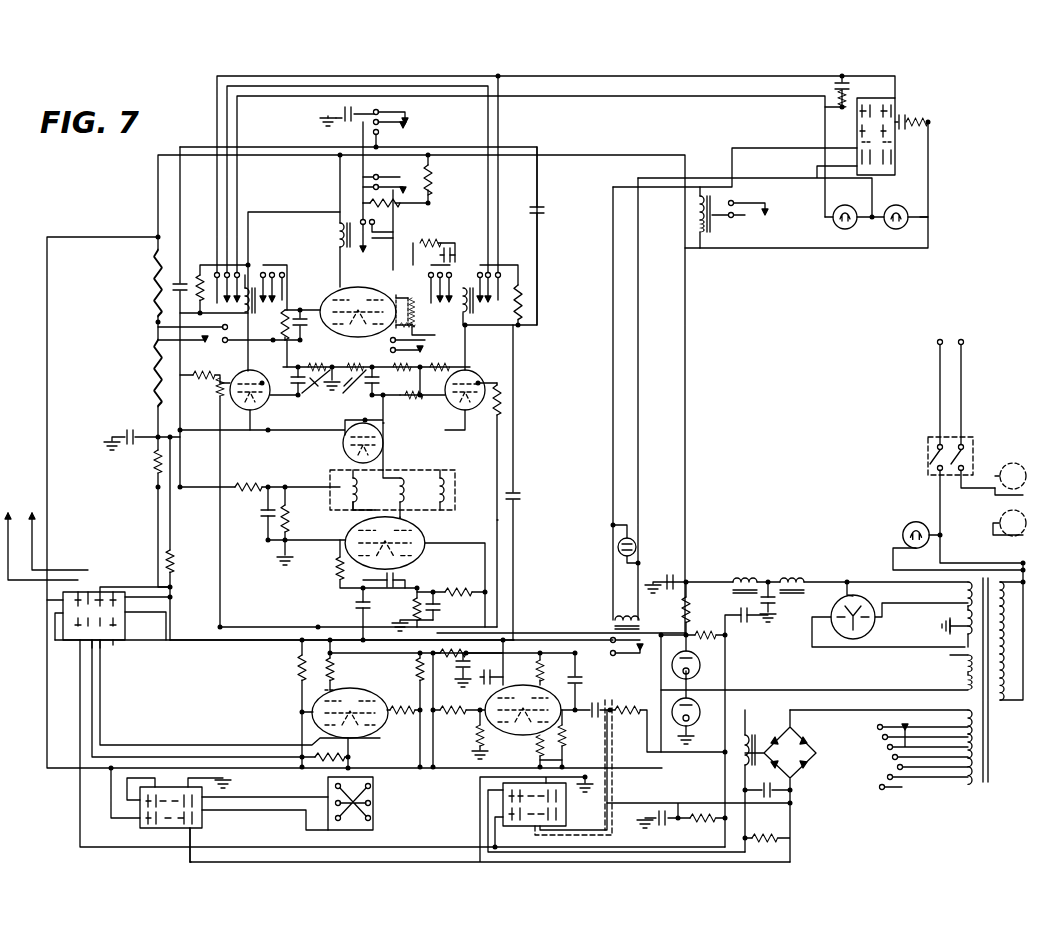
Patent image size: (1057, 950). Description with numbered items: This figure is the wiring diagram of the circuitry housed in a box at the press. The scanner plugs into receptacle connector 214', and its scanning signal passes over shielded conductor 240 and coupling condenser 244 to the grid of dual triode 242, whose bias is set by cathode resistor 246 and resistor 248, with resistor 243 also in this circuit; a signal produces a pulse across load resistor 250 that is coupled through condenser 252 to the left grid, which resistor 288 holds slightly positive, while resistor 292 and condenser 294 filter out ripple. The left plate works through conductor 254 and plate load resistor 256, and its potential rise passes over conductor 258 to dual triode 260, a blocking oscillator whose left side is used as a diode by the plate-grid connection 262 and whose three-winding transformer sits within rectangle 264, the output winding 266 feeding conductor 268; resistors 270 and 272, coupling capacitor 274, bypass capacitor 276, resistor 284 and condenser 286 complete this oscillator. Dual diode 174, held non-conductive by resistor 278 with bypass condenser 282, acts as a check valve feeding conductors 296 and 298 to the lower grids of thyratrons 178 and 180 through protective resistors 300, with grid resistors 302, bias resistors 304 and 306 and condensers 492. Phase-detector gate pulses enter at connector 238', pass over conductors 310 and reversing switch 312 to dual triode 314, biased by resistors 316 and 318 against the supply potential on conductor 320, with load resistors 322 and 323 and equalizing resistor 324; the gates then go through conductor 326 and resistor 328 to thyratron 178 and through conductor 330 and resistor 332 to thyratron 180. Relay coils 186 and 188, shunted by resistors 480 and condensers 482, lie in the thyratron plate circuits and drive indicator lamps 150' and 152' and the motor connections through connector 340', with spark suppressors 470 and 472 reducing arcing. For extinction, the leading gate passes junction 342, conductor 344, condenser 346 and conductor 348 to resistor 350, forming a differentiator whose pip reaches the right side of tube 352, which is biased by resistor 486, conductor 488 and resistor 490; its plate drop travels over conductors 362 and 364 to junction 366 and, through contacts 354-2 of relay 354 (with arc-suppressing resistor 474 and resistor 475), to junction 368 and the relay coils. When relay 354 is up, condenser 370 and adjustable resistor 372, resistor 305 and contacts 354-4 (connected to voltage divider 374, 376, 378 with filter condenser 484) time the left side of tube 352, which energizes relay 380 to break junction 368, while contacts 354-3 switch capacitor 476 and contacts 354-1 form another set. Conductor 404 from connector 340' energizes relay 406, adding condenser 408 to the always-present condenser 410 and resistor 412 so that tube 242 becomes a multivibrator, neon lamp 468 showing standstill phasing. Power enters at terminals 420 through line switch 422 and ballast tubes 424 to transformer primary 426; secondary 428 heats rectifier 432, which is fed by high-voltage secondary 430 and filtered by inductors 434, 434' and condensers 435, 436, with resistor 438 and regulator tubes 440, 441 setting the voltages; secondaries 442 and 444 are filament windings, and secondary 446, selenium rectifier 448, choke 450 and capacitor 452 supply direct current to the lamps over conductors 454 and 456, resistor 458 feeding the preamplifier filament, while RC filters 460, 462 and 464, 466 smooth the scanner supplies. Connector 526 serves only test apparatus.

The capacitor 476 is at (343, 119).
The upper relay contacts 354-3 is at (406, 126).
The relay contacts 354-2 is at (390, 213).
The resistor 475 is at (436, 182).
The resistor 474 is at (368, 198).
The junction 368 is at (363, 203).
The junction 366 is at (430, 203).
The relay 380 is at (337, 236).
The conductor 364 is at (374, 228).
The conductor 362 is at (392, 242).
The resistor 490 is at (440, 245).
The conductor 488 is at (435, 256).
The relay coil 188 is at (464, 280).
The condensers 482 is at (542, 213).
The spark suppressor 470 is at (837, 87).
The spark suppressor 472 is at (850, 95).
The connector 340' is at (767, 157).
The relay 354 is at (695, 216).
The red indicator lamp 150' is at (854, 229).
The green indicator lamp 152' is at (906, 229).
The shunt resistors 480 is at (206, 264).
The relay coil 186 is at (254, 270).
The tube 352 is at (330, 302).
The resistor 350 is at (400, 292).
The adjustable resistor 372 is at (284, 322).
The condenser 370 is at (310, 337).
The resistor 486 is at (409, 333).
The relay contacts 354-1 is at (424, 338).
The resistor 306 is at (316, 367).
The resistor 305 is at (422, 367).
The grid resistors 302 is at (294, 387).
The condensers 492 is at (337, 385).
The thyratron tube 178 is at (260, 380).
The resistor 304 is at (218, 384).
The resistor 328 is at (214, 412).
The protective resistors 300 is at (289, 412).
The conductor 296 is at (345, 423).
The dual diode 174 is at (343, 448).
The conductor 268 is at (333, 469).
The conductor 298 is at (383, 423).
The thyratron tube 180 is at (475, 376).
The conductor 348 is at (521, 365).
The resistor 332 is at (507, 405).
The condenser 282 is at (260, 513).
The resistor 278 is at (290, 513).
The output winding 266 is at (350, 494).
The plate-grid connection 262 is at (343, 538).
The transformer rectangle 264 is at (455, 510).
The condenser 346 is at (521, 493).
The conductor 330 is at (498, 520).
The plate load resistor 256 is at (176, 565).
The conductor 254 is at (170, 603).
The conductor 326 is at (220, 593).
The junction 342 is at (317, 627).
The resistor 284 is at (336, 567).
The dual triode 260 is at (413, 572).
The condenser 286 is at (390, 579).
The resistor 272 is at (458, 590).
The coupling capacitor 274 is at (360, 608).
The conductor 258 is at (361, 628).
The cathode resistor 270 is at (413, 615).
The capacitor 276 is at (438, 612).
The conductor 344 is at (513, 598).
The conductor 404 is at (638, 290).
The neon lamp 468 is at (634, 537).
The condenser 435 is at (672, 580).
The resistor 438 is at (690, 600).
The resistor 460 is at (693, 624).
The condenser 462 is at (743, 622).
The inductor 434 is at (733, 569).
The inductor 434' is at (808, 569).
The condenser 436 is at (776, 604).
The rectifier tube 432 is at (873, 632).
The low voltage secondary 428 is at (962, 590).
The high voltage secondary 430 is at (958, 623).
The transformer primary 426 is at (1006, 612).
The transformer secondary coil 442 is at (957, 665).
The transformer secondary coil 444 is at (960, 686).
The secondary 446 is at (973, 754).
The selenium rectifier 448 is at (790, 756).
The choke 450 is at (736, 732).
The capacitor 452 is at (767, 785).
The resistor 458 is at (767, 826).
The conductor 454 is at (666, 803).
The condenser 466 is at (659, 824).
The resistor 464 is at (703, 741).
The shielded conductor 240 is at (612, 810).
The web scanner receptacle connector 214' is at (490, 819).
The relay 406 is at (608, 628).
The condenser 408 is at (597, 670).
The condenser 410 is at (591, 683).
The coupling condenser 244 is at (600, 703).
The resistor 243 is at (625, 726).
The load resistor 250 is at (535, 670).
The condenser 252 is at (491, 667).
The dual triode 242 is at (558, 666).
The resistor 292 is at (456, 664).
The condenser 294 is at (465, 684).
The resistor 288 is at (458, 711).
The cathode resistor 246 is at (538, 752).
The resistor 412 is at (572, 743).
The resistor 248 is at (570, 757).
The voltage regulator tube 440 is at (700, 659).
The voltage regulator tube 441 is at (695, 693).
The resistors 316 is at (299, 670).
The load resistor 322 is at (346, 664).
The load resistor 323 is at (332, 690).
The dual triode 314 is at (374, 722).
The resistor 324 is at (400, 706).
The resistors 318 is at (310, 749).
The conductor 320 is at (236, 661).
The conductors 310 is at (252, 797).
The reversing switch 312 is at (377, 798).
The receptacle connector 238' is at (170, 814).
The conductor 456 is at (326, 860).
The connector 526 is at (98, 592).
The voltage divider resistor 374 is at (157, 286).
The relay contacts 354-4 is at (188, 339).
The voltage divider resistor 376 is at (157, 371).
The condenser 484 is at (130, 430).
The voltage divider resistor 378 is at (157, 465).
The terminals 420 is at (945, 375).
The line switch 422 is at (923, 450).
The ballast tubes 424 is at (1025, 490).